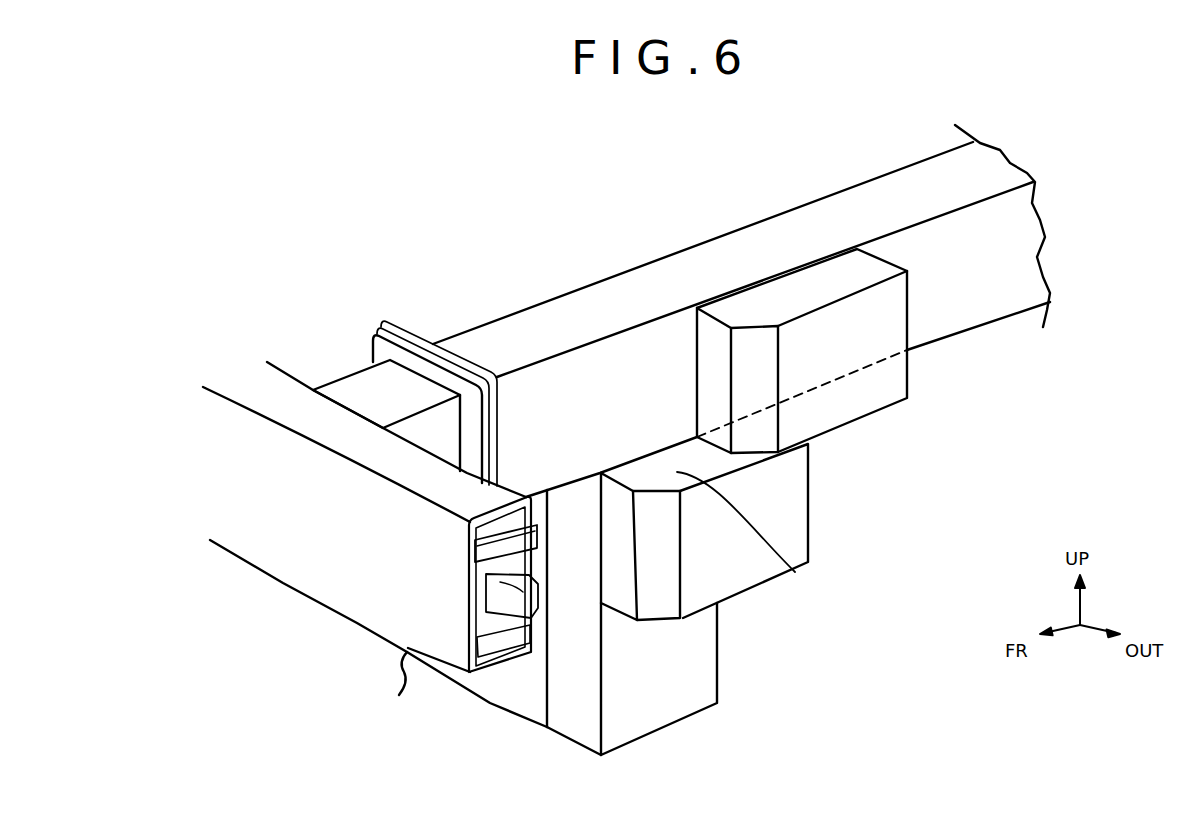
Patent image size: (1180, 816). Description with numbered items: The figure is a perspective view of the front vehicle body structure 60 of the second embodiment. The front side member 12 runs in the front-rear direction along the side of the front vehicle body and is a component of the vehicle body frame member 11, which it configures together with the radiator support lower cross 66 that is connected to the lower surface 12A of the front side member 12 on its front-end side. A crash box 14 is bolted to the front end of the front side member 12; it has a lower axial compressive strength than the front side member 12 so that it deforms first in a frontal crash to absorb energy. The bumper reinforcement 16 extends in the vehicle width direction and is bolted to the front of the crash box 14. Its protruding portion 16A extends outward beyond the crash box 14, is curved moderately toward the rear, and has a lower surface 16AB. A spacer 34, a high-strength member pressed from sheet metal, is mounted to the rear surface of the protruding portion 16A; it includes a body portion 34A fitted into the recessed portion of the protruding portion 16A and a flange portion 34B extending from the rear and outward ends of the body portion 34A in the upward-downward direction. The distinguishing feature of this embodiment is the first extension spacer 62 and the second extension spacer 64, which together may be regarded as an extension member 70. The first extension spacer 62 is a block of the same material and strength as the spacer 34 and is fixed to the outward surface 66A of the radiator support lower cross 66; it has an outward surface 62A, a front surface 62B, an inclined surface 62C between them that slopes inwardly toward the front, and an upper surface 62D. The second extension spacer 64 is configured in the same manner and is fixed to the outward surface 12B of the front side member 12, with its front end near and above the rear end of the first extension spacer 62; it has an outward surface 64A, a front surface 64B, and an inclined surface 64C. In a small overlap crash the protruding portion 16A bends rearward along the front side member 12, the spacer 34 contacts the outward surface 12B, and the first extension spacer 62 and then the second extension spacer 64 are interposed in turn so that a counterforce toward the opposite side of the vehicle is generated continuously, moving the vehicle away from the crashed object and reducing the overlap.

The vehicle body frame member 11 is at (736, 437).
The front side member 12 is at (833, 190).
The lower surface 12A is at (565, 487).
The outward surface 12B is at (990, 253).
The crash box 14 is at (336, 373).
The bumper reinforcement 16 is at (375, 579).
The protruding portion 16A is at (335, 580).
The lower surface 16AB is at (443, 657).
The spacer 34 is at (464, 643).
The body portion 34A is at (500, 582).
The flange portion 34B is at (493, 566).
The front vehicle body structure 60 is at (766, 418).
The first extension spacer 62 is at (717, 555).
The outward surface 62A is at (775, 520).
The front surface 62B is at (618, 513).
The inclined surface 62C is at (657, 592).
The upper surface 62D is at (795, 570).
The second extension spacer 64 is at (803, 376).
The outward surface 64A is at (870, 326).
The front surface 64B is at (708, 350).
The inclined surface 64C is at (755, 347).
The radiator support lower cross 66 is at (704, 696).
The outward surface 66A is at (697, 658).
The extension member 70 is at (766, 471).